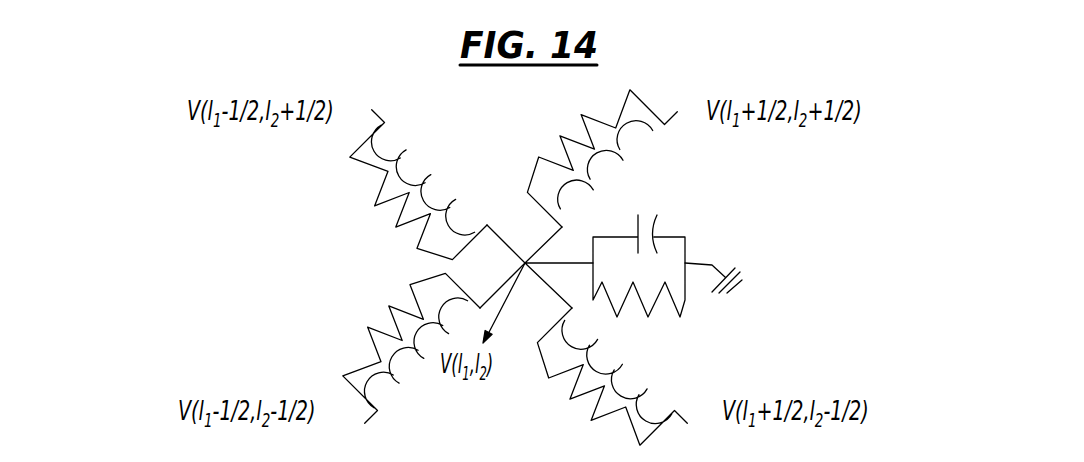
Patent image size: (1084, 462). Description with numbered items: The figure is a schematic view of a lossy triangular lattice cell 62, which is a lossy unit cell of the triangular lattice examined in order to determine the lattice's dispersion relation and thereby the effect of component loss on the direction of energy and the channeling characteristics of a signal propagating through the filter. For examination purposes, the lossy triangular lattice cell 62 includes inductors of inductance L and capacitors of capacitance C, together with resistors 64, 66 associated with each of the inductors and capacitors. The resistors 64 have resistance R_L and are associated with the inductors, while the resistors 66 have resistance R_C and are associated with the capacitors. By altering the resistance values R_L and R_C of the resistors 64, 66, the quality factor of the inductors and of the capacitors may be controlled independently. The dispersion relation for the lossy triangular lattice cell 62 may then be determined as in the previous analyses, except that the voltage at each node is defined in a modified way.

The lossy triangular lattice cell 62 is at (762, 235).
The resistor 64 is at (372, 185).
The resistor 66 is at (684, 303).